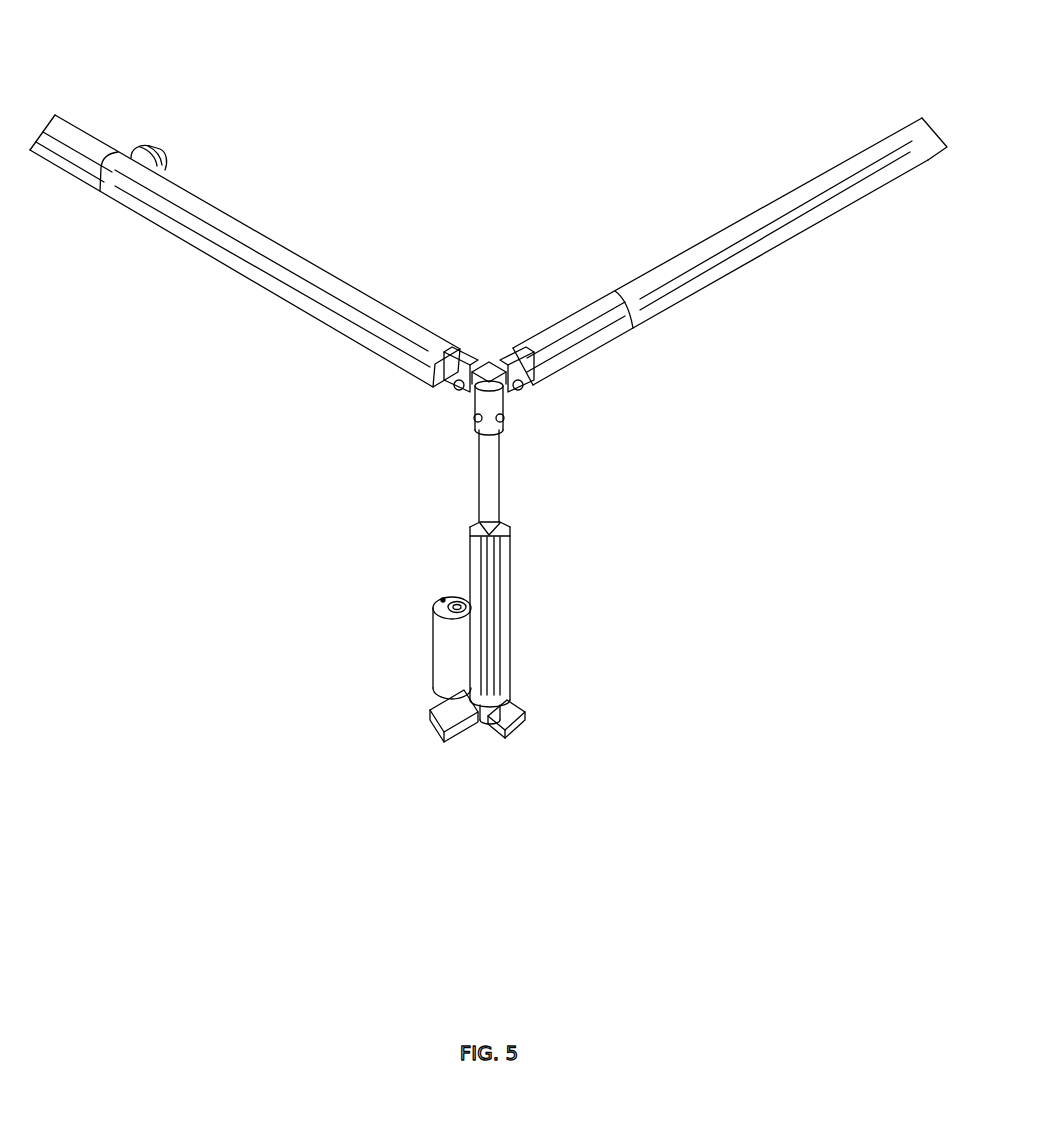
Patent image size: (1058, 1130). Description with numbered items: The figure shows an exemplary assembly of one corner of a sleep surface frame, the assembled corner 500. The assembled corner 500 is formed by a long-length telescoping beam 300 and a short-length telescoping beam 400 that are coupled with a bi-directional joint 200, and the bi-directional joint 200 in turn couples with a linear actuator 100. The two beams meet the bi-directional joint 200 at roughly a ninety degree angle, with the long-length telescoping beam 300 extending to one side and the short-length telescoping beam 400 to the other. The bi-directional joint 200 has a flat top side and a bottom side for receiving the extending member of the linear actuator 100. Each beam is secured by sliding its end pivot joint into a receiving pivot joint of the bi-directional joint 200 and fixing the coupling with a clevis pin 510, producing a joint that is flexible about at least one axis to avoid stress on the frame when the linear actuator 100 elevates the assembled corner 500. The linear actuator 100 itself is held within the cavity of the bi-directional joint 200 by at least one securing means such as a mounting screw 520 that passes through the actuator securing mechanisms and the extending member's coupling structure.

The assembled corner of the sleep surface frame 500 is at (546, 178).
The long-length telescoping beam 300 is at (242, 220).
The short-length telescoping beam 400 is at (752, 215).
The bi-directional joint 200 is at (488, 374).
The clevis pin 510 is at (458, 384).
The securing means (mounting screw) 520 is at (478, 418).
The linear actuator 100 is at (507, 608).